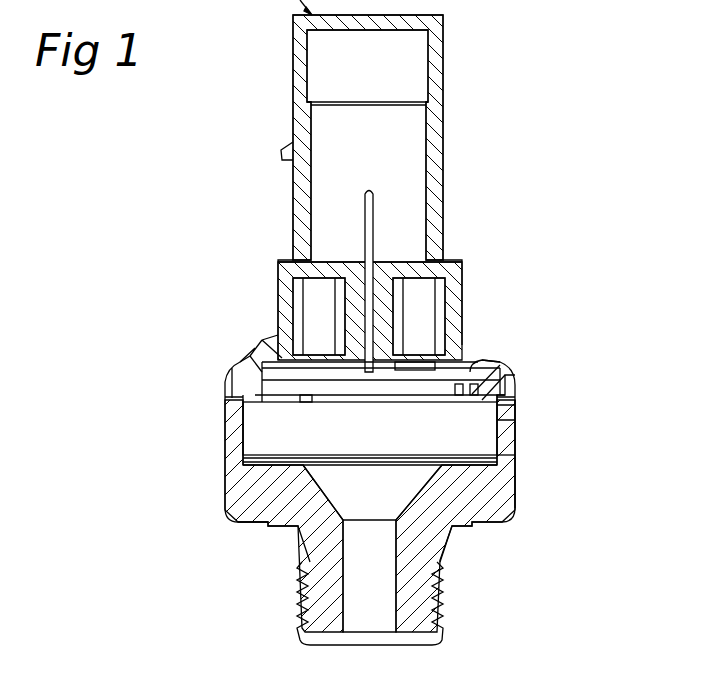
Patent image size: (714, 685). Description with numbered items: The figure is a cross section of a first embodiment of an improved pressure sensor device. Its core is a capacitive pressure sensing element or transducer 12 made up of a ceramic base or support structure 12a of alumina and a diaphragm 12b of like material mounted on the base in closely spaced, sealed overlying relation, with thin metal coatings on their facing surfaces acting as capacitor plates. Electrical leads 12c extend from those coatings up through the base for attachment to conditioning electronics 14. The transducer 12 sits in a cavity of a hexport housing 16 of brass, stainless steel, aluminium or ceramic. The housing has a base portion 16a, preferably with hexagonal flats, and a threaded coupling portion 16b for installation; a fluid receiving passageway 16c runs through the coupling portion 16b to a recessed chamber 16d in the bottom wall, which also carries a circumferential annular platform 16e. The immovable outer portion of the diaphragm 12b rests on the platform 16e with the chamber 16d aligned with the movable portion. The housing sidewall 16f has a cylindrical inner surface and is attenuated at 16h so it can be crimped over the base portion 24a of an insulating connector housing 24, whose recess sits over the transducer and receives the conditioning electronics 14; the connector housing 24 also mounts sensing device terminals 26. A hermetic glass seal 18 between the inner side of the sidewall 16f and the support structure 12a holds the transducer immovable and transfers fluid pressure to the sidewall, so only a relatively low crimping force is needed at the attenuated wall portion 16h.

The capacitive pressure sensing element 12 is at (268, 438).
The ceramic base 12a is at (240, 459).
The diaphragm 12b is at (243, 470).
The electrical leads 12c is at (505, 375).
The conditioning electronics 14 is at (432, 394).
The hexport housing 16 is at (278, 530).
The base portion 16a is at (228, 514).
The threaded coupling portion 16b is at (445, 606).
The fluid receiving passageway 16c is at (386, 612).
The recessed chamber 16d is at (430, 522).
The annular platform 16e is at (516, 476).
The sidewall 16f is at (506, 450).
The attenuated wall portion 16h is at (510, 380).
The hermetic seal 18 is at (516, 414).
The connector housing 24 is at (275, 312).
The base portion 24a is at (258, 354).
The sensing device terminals 26 is at (373, 190).